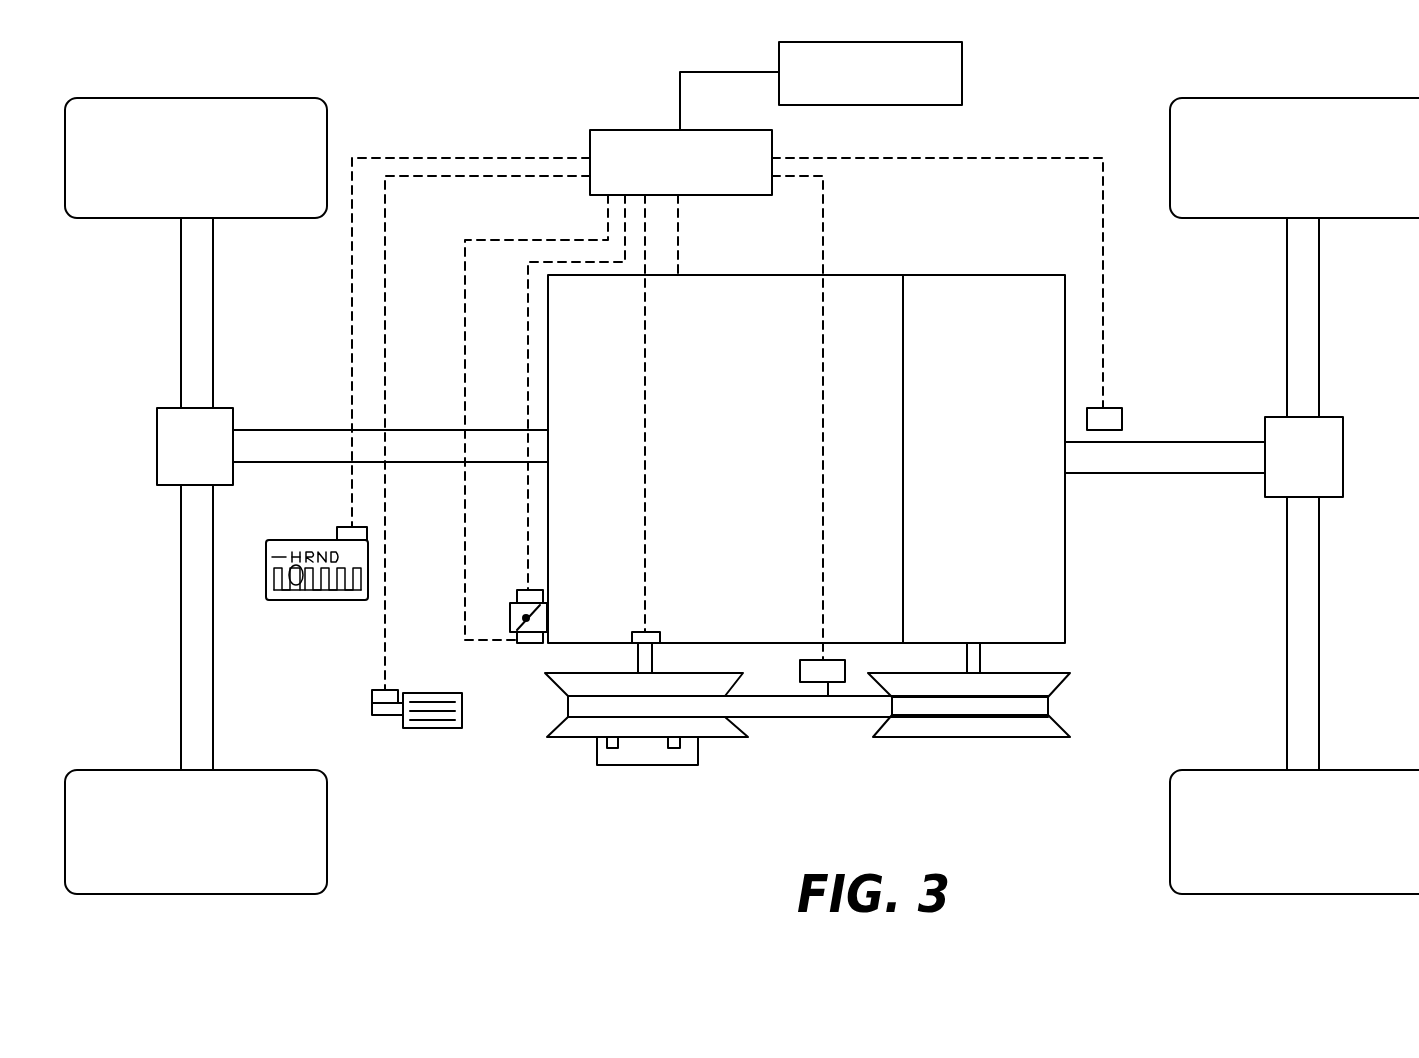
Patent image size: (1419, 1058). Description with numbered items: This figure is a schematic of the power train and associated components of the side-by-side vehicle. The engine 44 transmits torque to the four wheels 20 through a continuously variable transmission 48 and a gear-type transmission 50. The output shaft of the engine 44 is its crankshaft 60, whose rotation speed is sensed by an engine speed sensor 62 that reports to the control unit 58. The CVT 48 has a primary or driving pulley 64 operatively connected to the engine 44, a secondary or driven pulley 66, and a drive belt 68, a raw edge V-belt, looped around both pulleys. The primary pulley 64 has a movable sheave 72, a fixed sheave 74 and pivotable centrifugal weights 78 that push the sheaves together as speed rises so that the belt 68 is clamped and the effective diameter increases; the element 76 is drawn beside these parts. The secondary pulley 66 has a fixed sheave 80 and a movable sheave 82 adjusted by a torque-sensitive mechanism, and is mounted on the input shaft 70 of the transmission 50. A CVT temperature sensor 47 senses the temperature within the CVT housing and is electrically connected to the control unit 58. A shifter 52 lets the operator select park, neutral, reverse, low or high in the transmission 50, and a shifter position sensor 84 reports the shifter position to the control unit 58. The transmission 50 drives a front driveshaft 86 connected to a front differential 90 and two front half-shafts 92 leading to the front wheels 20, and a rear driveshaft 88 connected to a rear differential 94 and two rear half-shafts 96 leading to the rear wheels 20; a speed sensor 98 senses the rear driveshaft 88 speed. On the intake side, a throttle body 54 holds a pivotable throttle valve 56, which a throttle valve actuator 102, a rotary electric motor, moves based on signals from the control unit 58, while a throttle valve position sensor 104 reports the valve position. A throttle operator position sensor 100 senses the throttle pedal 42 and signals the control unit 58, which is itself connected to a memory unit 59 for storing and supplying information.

The wheels 20 is at (185, 170).
The throttle pedal 42 is at (430, 728).
The engine 44 is at (761, 472).
The CVT temperature sensor 47 is at (828, 683).
The continuously variable transmission 48 is at (791, 759).
The gear-type transmission 50 is at (974, 472).
The shifter 52 is at (298, 600).
The throttle body 54 is at (510, 618).
The throttle valve 56 is at (520, 636).
The control unit 58 is at (669, 172).
The memory unit 59 is at (857, 84).
The crankshaft 60 is at (638, 657).
The engine speed sensor 62 is at (660, 636).
The primary pulley 64 is at (776, 762).
The secondary pulley 66 is at (972, 765).
The drive belt 68 is at (808, 718).
The input shaft 70 is at (980, 660).
The movable sheave 72 is at (706, 738).
The fixed sheave 74 is at (568, 685).
The actuator housing 76 is at (605, 765).
The centrifugal weights 78 is at (675, 748).
The fixed sheave 80 is at (912, 732).
The movable sheave 82 is at (1002, 682).
The shifter position sensor 84 is at (337, 533).
The front driveshaft 86 is at (437, 447).
The rear driveshaft 88 is at (1140, 474).
The front differential 90 is at (157, 478).
The front half-shafts 92 is at (181, 318).
The rear differential 94 is at (1343, 450).
The rear half-shafts 96 is at (1319, 290).
The speed sensor 98 is at (1122, 414).
The throttle operator position sensor 100 is at (372, 692).
The throttle valve actuator 102 is at (535, 645).
The throttle valve position sensor 104 is at (527, 590).